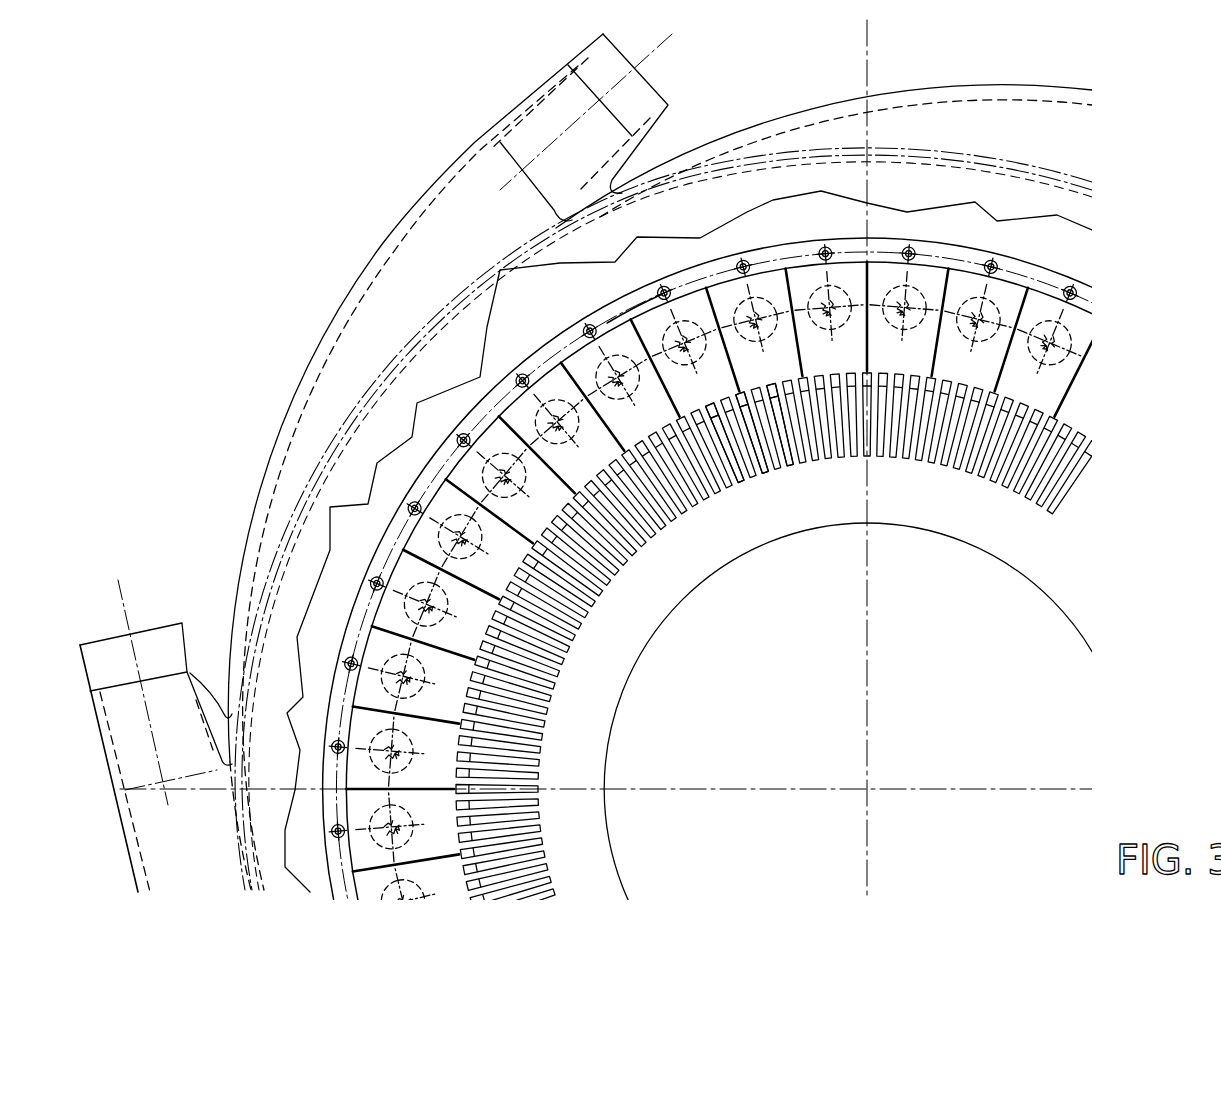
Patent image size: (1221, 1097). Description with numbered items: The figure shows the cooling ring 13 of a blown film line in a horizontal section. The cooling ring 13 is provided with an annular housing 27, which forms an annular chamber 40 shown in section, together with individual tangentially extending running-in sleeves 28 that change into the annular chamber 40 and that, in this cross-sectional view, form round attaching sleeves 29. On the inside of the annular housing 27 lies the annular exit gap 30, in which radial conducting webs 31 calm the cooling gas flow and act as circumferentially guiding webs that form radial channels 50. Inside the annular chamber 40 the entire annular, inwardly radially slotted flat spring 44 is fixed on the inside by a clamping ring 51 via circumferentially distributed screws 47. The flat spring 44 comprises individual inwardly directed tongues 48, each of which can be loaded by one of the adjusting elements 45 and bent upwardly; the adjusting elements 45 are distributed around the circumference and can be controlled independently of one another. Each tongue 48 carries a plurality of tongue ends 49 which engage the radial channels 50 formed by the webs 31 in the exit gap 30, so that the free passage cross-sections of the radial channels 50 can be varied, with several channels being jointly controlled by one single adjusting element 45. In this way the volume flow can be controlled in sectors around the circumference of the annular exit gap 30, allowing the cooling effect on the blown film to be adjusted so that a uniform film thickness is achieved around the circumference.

The cooling ring 13 is at (168, 446).
The annular housing 27 is at (330, 440).
The running-in sleeves 28 is at (386, 242).
The attaching sleeves 29 is at (597, 70).
The annular exit gap 30 is at (918, 508).
The conducting webs 31 is at (812, 456).
The annular chamber 40 is at (362, 548).
The flat spring 44 is at (770, 268).
The adjusting elements 45 is at (614, 370).
The screws 47 is at (662, 290).
The tongues 48 is at (705, 388).
The tongue ends 49 is at (747, 438).
The radial channels 50 is at (778, 440).
The clamping ring 51 is at (566, 336).